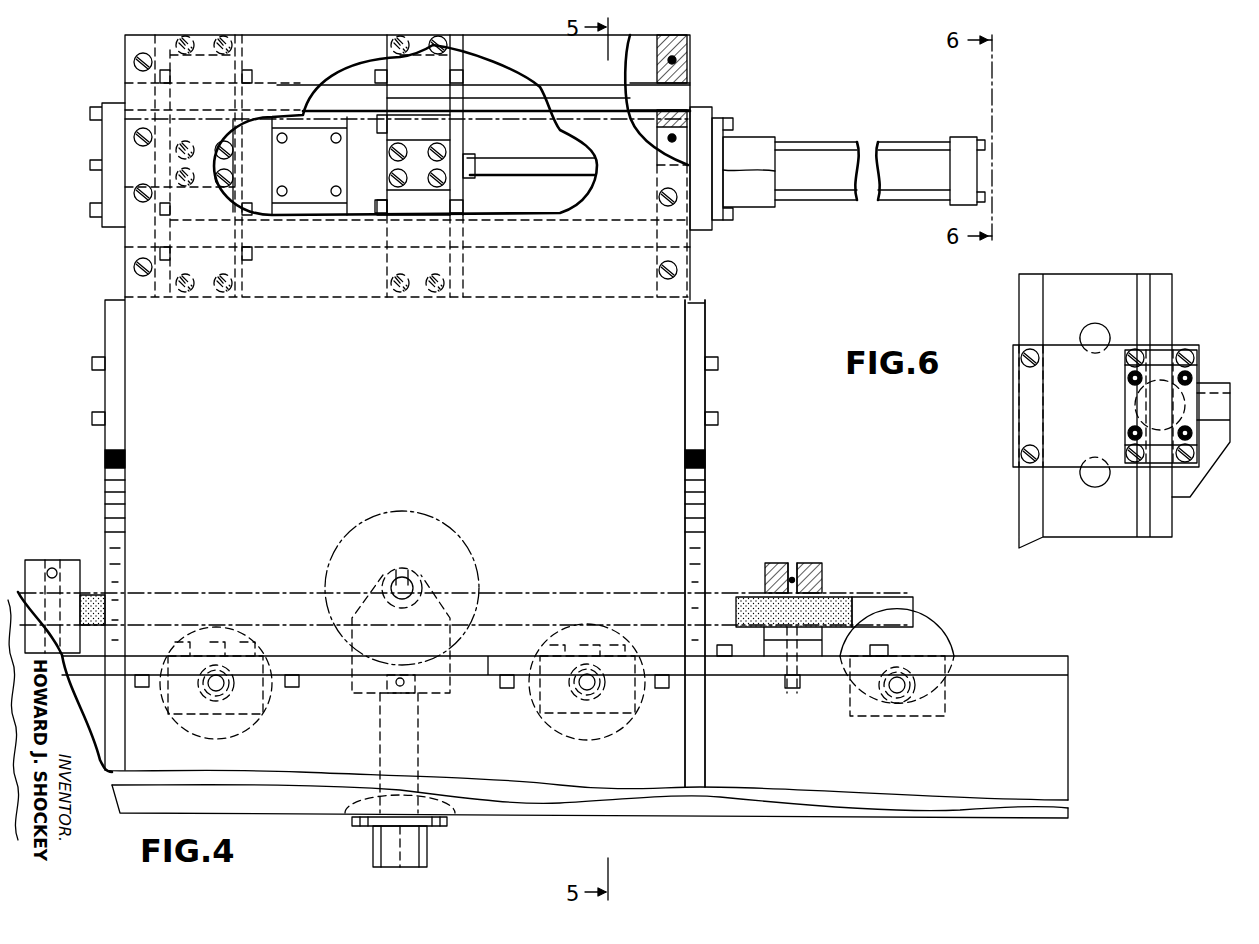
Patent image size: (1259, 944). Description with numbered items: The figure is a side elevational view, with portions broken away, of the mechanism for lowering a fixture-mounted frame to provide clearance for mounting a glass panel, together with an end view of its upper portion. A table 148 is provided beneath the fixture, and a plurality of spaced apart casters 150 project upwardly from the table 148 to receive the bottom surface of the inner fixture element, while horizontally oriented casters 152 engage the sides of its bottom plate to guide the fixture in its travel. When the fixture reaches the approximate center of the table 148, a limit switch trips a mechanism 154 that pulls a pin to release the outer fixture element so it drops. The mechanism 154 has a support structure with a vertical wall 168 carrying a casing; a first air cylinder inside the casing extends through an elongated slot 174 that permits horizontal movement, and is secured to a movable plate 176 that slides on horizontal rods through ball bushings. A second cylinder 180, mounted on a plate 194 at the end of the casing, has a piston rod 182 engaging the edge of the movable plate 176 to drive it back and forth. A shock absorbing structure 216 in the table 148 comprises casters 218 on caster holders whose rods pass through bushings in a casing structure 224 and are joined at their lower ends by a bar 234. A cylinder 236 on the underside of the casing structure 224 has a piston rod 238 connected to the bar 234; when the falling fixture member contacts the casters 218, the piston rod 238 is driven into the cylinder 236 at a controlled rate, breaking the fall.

In FIG. 4, the table 148 is at (990, 665).
In FIG. 4, the casters 150 is at (924, 644).
In FIG. 4, the horizontally oriented casters 152 is at (828, 597).
In FIG. 4, the mechanism 154 is at (68, 168).
In FIG. 4, the vertical wall 168 is at (680, 488).
In FIG. 4, the elongated slot 174 is at (576, 203).
In FIG. 4, the movable plate 176 is at (462, 196).
In FIG. 4, the second cylinder 180 is at (803, 157).
In FIG. 6, the second cylinder 180 is at (1192, 382).
In FIG. 4, the piston rod 182 is at (547, 137).
In FIG. 4, the plate 194 is at (688, 78).
In FIG. 6, the plate 194 is at (1013, 391).
In FIG. 4, the shock absorbing structure 216 is at (372, 846).
In FIG. 4, the caster 218 is at (462, 556).
In FIG. 4, the casing structure 224 is at (567, 812).
In FIG. 4, the bar 234 is at (447, 693).
In FIG. 4, the cylinder 236 is at (430, 849).
In FIG. 4, the piston rod 238 is at (340, 816).